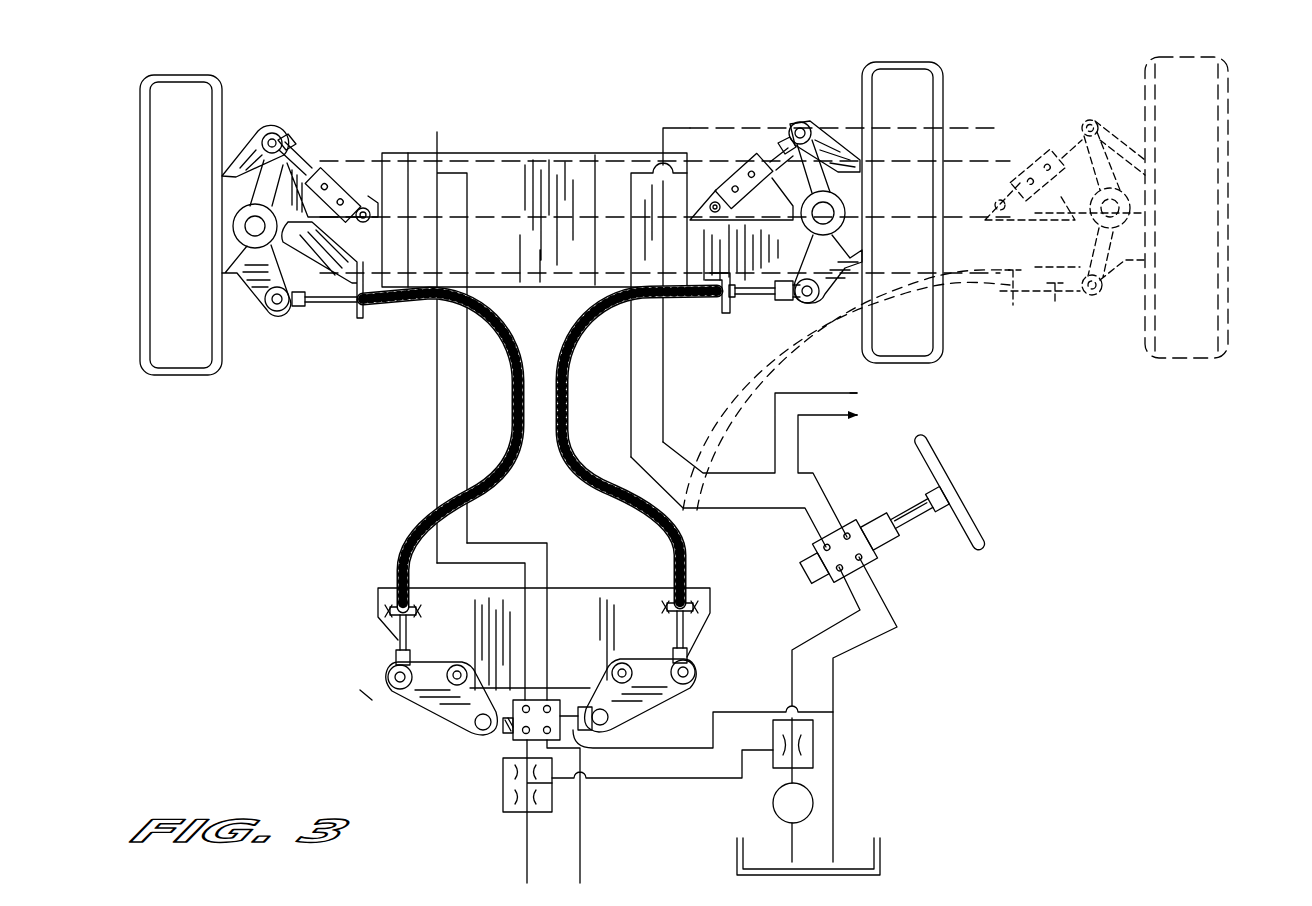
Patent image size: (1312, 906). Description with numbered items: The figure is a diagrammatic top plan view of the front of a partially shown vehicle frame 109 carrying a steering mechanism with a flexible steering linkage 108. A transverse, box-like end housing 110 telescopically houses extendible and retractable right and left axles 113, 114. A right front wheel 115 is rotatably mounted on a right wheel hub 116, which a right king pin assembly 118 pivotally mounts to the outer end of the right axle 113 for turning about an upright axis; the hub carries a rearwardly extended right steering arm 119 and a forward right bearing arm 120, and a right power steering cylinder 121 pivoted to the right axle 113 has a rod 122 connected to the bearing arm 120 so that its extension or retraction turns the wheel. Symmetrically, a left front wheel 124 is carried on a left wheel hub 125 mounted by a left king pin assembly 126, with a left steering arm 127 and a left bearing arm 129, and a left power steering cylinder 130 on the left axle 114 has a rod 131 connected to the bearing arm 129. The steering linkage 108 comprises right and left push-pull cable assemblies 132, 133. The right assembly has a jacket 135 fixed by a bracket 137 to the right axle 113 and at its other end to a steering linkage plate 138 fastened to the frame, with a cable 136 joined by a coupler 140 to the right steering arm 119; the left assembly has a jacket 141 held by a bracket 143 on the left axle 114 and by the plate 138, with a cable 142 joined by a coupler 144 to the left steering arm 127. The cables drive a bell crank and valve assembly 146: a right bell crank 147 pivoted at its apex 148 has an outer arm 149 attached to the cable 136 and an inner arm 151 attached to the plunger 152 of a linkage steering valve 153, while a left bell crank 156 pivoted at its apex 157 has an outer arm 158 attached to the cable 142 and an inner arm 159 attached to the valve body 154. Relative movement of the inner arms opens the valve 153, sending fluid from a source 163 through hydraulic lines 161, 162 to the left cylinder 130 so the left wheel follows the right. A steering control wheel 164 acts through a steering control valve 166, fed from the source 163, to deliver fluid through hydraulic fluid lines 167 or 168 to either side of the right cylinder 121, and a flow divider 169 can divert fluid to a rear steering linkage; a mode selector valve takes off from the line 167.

The flexible steering linkage 108 is at (540, 448).
The vehicle frame 109 is at (518, 148).
The transverse box-like end housing 110 is at (565, 168).
The right axle 113 is at (700, 262).
The left axle 114 is at (326, 168).
The right front wheel 115 is at (912, 78).
The right wheel hub 116 is at (848, 150).
The right king pin assembly 118 is at (815, 209).
The right steering arm 119 is at (822, 302).
The right bearing arm 120 is at (800, 125).
The right power steering cylinder 121 is at (737, 186).
The rod 122 is at (773, 150).
The left front wheel 124 is at (140, 113).
The left wheel hub 125 is at (240, 250).
The left king pin assembly 126 is at (276, 240).
The left steering arm 127 is at (262, 290).
The left bearing arm 129 is at (248, 160).
The left power steering cylinder 130 is at (370, 207).
The rod 131 is at (300, 150).
The right push-pull cable assembly 132 is at (586, 440).
The left push-pull cable assembly 133 is at (506, 433).
The jacket 135 is at (627, 503).
The cable 136 is at (752, 298).
The bracket 137 is at (728, 306).
The steering linkage plate 138 is at (706, 633).
The coupler 140 is at (780, 296).
The jacket 141 is at (490, 492).
The cable 142 is at (325, 303).
The bracket 143 is at (366, 318).
The coupler 144 is at (298, 307).
The bell crank and valve assembly 146 is at (468, 741).
The right bell crank 147 is at (670, 683).
The apex 148 is at (614, 665).
The outer arm 149 is at (700, 672).
The inner arm 151 is at (625, 705).
The plunger 152 is at (603, 745).
The linkage steering valve 153 is at (515, 740).
The body 154 is at (505, 731).
The left bell crank 156 is at (388, 679).
The apex 157 is at (470, 662).
The outer arm 158 is at (385, 677).
The inner arm 159 is at (472, 722).
The hydraulic line 161 is at (570, 558).
The hydraulic line 162 is at (524, 580).
The source 163 is at (838, 852).
The steering control wheel 164 is at (985, 536).
The steering control valve 166 is at (882, 553).
The hydraulic fluid line 167 is at (666, 437).
The hydraulic fluid line 168 is at (628, 340).
The flow divider 169 is at (510, 815).